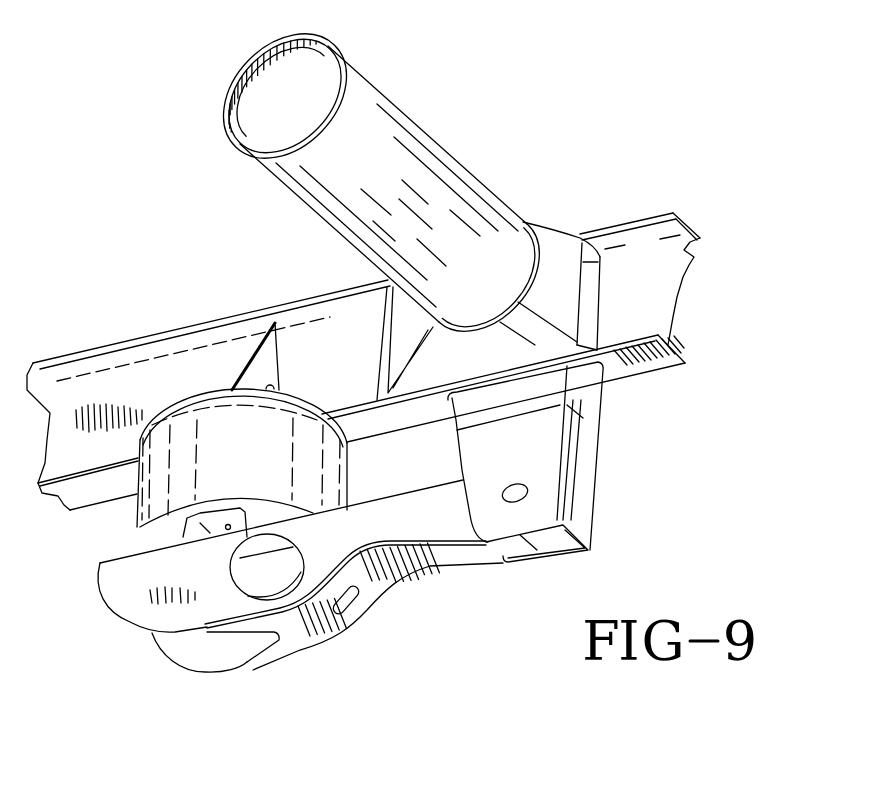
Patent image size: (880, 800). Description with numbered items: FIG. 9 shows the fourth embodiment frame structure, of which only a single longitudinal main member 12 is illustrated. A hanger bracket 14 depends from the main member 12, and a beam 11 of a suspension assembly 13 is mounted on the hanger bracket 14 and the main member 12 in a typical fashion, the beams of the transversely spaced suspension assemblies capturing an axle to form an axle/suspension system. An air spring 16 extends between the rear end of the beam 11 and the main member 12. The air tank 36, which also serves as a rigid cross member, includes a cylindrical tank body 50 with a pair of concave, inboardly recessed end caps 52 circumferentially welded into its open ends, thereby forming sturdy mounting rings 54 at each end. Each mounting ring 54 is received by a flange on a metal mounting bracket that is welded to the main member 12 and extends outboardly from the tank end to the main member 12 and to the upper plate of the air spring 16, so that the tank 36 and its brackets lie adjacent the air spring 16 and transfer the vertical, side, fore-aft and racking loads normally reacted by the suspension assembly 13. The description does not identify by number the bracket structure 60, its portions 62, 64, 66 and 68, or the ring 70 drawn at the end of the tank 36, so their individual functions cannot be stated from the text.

The beam 11 is at (212, 656).
The longitudinal main member 12 is at (680, 280).
The suspension assembly 13 is at (380, 609).
The hanger bracket 14 is at (583, 498).
The air spring 16 is at (345, 480).
The air tank 36 is at (356, 181).
The cylindrical tank body 50 is at (487, 202).
The end caps 52 is at (272, 121).
The mounting rings 54 is at (288, 156).
The tube mounting assembly 60 is at (506, 218).
The upper mounting flange 62 is at (550, 230).
The vertical leg of mounting flange 64 is at (570, 280).
The lower gusset strut 66 is at (527, 320).
The vertical support plate 68 is at (407, 350).
The tube end flange ring 70 is at (523, 270).